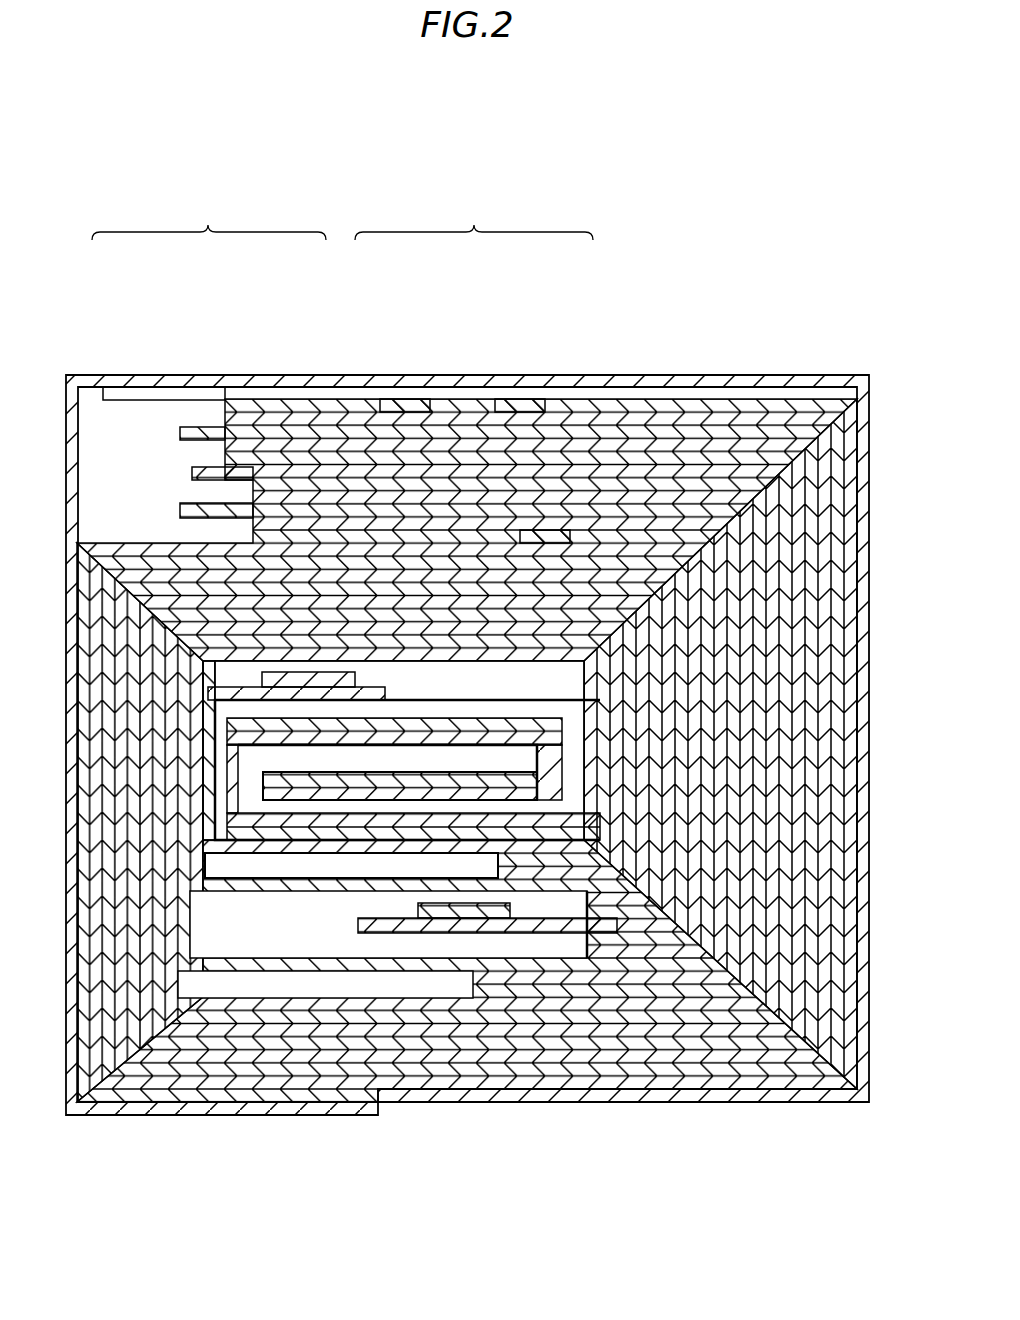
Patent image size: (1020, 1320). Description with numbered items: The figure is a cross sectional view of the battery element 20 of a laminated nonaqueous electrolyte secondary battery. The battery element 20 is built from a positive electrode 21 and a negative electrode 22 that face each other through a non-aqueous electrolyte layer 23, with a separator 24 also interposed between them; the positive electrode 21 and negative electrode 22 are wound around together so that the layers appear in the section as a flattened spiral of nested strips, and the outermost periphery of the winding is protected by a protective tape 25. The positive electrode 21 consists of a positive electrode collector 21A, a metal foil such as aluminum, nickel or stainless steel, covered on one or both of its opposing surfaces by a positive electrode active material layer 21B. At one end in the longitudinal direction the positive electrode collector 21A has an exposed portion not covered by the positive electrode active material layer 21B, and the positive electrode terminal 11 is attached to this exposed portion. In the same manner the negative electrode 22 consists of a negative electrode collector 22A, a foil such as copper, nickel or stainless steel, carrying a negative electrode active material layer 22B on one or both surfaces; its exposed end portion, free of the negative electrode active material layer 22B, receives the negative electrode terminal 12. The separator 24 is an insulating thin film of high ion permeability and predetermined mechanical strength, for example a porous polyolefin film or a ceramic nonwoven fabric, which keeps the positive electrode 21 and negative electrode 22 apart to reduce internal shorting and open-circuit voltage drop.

The battery element 20 is at (680, 205).
The positive electrode 21 is at (209, 360).
The positive electrode collector 21A is at (217, 473).
The positive electrode active material layer 21B is at (290, 488).
The negative electrode 22 is at (474, 372).
The negative electrode collector 22A is at (403, 398).
The negative electrode active material layer 22B is at (540, 535).
The non-aqueous electrolyte layer 23 is at (638, 523).
The separator 24 is at (760, 430).
The protective tape 25 is at (818, 385).
The positive electrode terminal 11 is at (286, 682).
The negative electrode terminal 12 is at (457, 906).